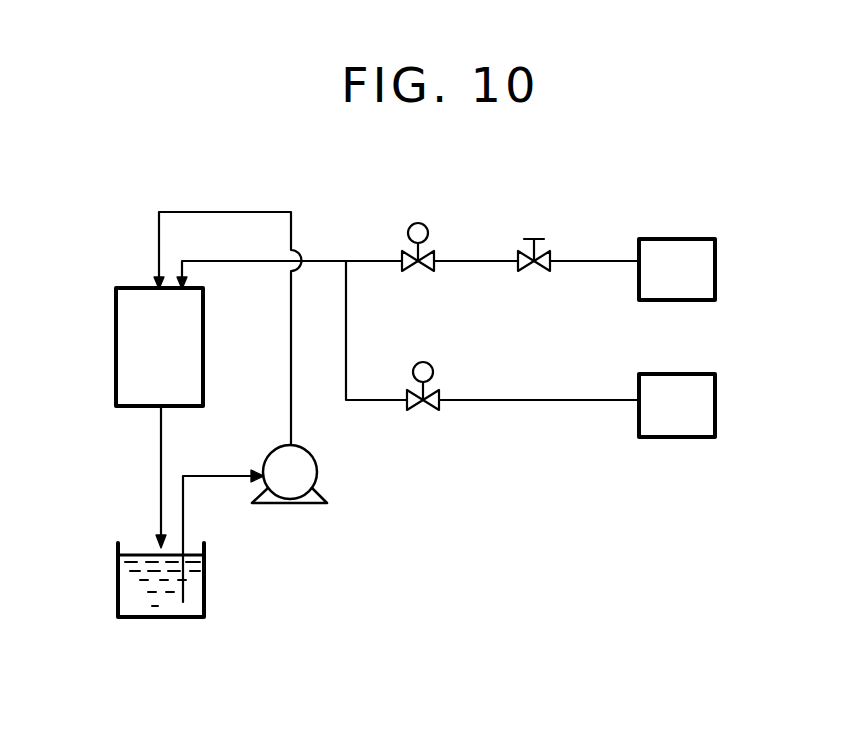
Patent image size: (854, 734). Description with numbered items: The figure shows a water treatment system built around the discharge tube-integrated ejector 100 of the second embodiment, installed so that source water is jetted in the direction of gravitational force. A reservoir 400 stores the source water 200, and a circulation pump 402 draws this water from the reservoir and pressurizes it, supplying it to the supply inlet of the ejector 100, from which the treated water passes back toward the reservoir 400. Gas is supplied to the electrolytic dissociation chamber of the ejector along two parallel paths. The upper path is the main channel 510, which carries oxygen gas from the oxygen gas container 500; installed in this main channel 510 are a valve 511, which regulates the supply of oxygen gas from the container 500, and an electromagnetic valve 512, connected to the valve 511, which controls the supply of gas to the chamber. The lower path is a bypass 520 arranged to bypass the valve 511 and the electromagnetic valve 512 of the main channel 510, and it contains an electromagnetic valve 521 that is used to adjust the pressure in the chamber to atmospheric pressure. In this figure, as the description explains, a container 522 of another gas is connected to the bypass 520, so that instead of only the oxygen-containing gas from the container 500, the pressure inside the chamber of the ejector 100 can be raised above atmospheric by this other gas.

The ejector 100 is at (118, 363).
The source water 200 is at (162, 607).
The reservoir 400 is at (206, 574).
The circulation pump 402 is at (316, 466).
The oxygen gas container 500 is at (683, 237).
The main channel 510 is at (372, 258).
The valve 511 is at (556, 253).
The electromagnetic valve 512 is at (429, 233).
The bypass 520 is at (549, 402).
The electromagnetic valve 521 is at (434, 366).
The supply source 522 is at (683, 372).